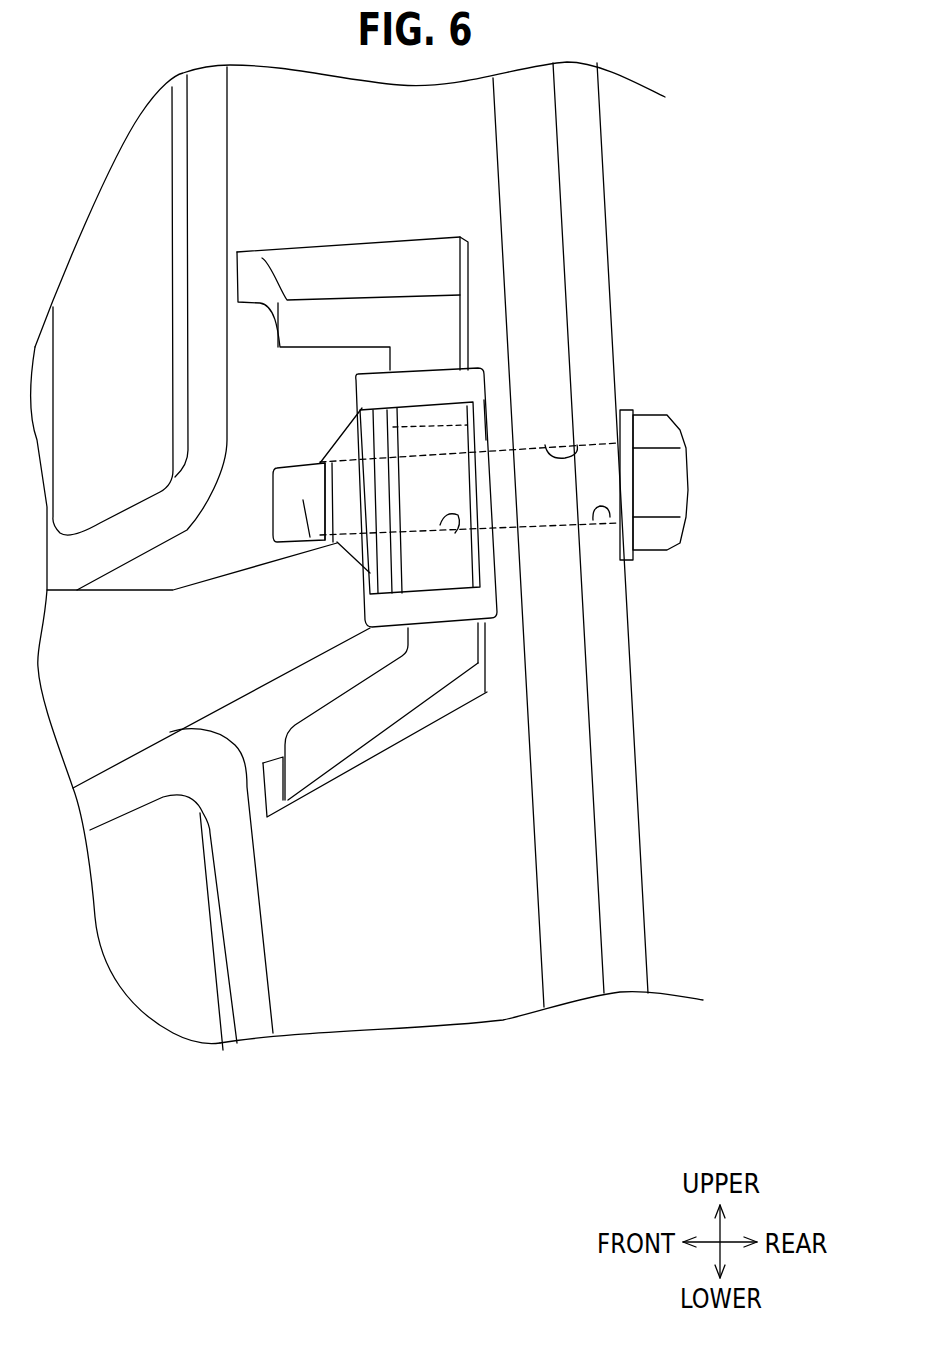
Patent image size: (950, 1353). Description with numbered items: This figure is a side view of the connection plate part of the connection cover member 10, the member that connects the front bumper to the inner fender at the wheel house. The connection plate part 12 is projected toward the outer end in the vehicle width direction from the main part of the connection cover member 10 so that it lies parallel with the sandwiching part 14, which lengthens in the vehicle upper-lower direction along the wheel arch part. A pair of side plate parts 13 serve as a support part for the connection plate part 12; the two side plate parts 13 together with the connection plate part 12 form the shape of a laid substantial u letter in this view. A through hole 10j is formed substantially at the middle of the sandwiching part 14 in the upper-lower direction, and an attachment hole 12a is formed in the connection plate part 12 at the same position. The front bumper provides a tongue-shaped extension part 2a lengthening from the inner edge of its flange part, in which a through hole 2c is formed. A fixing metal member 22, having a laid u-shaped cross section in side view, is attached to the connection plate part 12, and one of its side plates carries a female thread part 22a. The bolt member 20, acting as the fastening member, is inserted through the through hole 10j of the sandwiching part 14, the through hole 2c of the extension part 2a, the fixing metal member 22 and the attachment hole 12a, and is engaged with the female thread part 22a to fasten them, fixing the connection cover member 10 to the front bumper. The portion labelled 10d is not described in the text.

The connection cover member 10 is at (538, 180).
The wall portion of body member 10d is at (298, 233).
The through hole 10j is at (607, 527).
The connection plate part 12 is at (435, 352).
The attachment hole 12a is at (455, 525).
The side plate part 13 is at (400, 270).
The sandwiching part 14 is at (615, 680).
The bolt member 20 is at (687, 458).
The fixing metal member 22 is at (343, 453).
The female thread part 22a is at (310, 482).
The extension part 2a is at (498, 430).
The through hole 2c is at (583, 440).